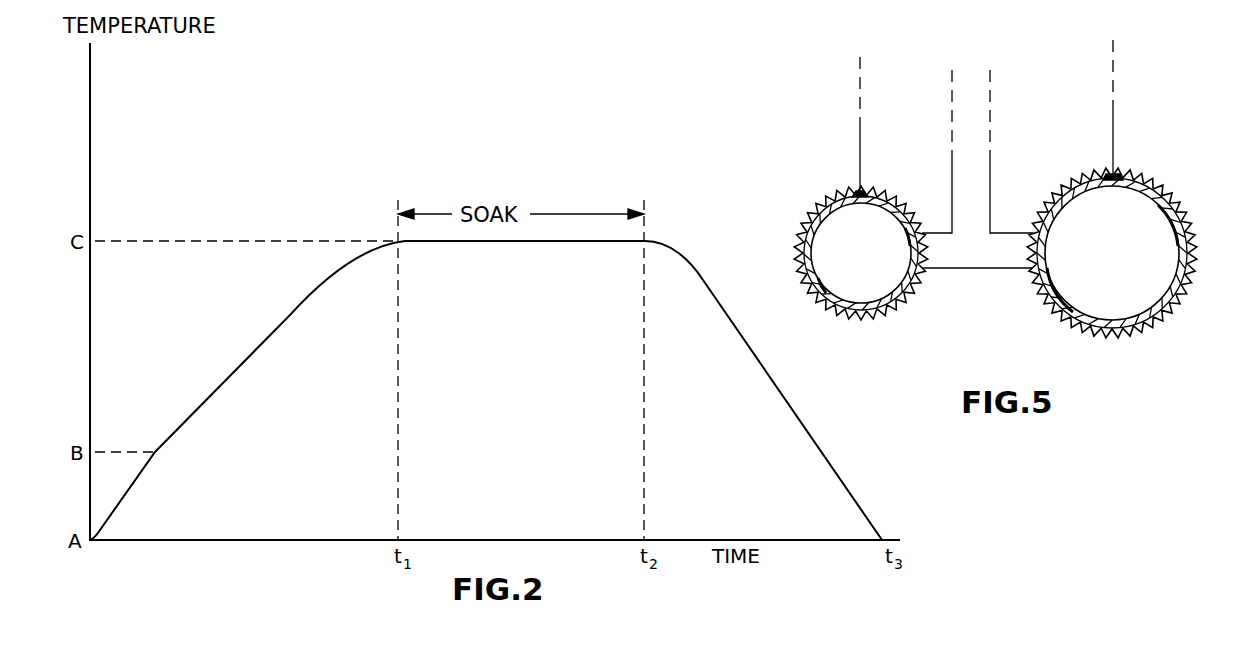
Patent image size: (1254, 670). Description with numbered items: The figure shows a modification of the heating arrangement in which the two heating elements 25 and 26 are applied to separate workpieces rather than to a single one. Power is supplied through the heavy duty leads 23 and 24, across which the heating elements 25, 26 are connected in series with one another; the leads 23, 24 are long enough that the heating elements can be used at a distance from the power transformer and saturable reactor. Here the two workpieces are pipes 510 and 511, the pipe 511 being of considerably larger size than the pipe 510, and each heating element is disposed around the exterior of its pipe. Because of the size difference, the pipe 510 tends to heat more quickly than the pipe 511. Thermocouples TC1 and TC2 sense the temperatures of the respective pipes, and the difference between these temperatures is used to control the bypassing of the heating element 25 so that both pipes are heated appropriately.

The heavy duty lead 23 is at (952, 178).
The heavy duty lead 24 is at (991, 172).
The heating element 25 is at (822, 200).
The heating element 26 is at (1172, 195).
The pipe 510 is at (828, 300).
The pipe 511 is at (1078, 318).
The thermocouple TC1 is at (866, 194).
The thermocouple TC2 is at (1118, 176).